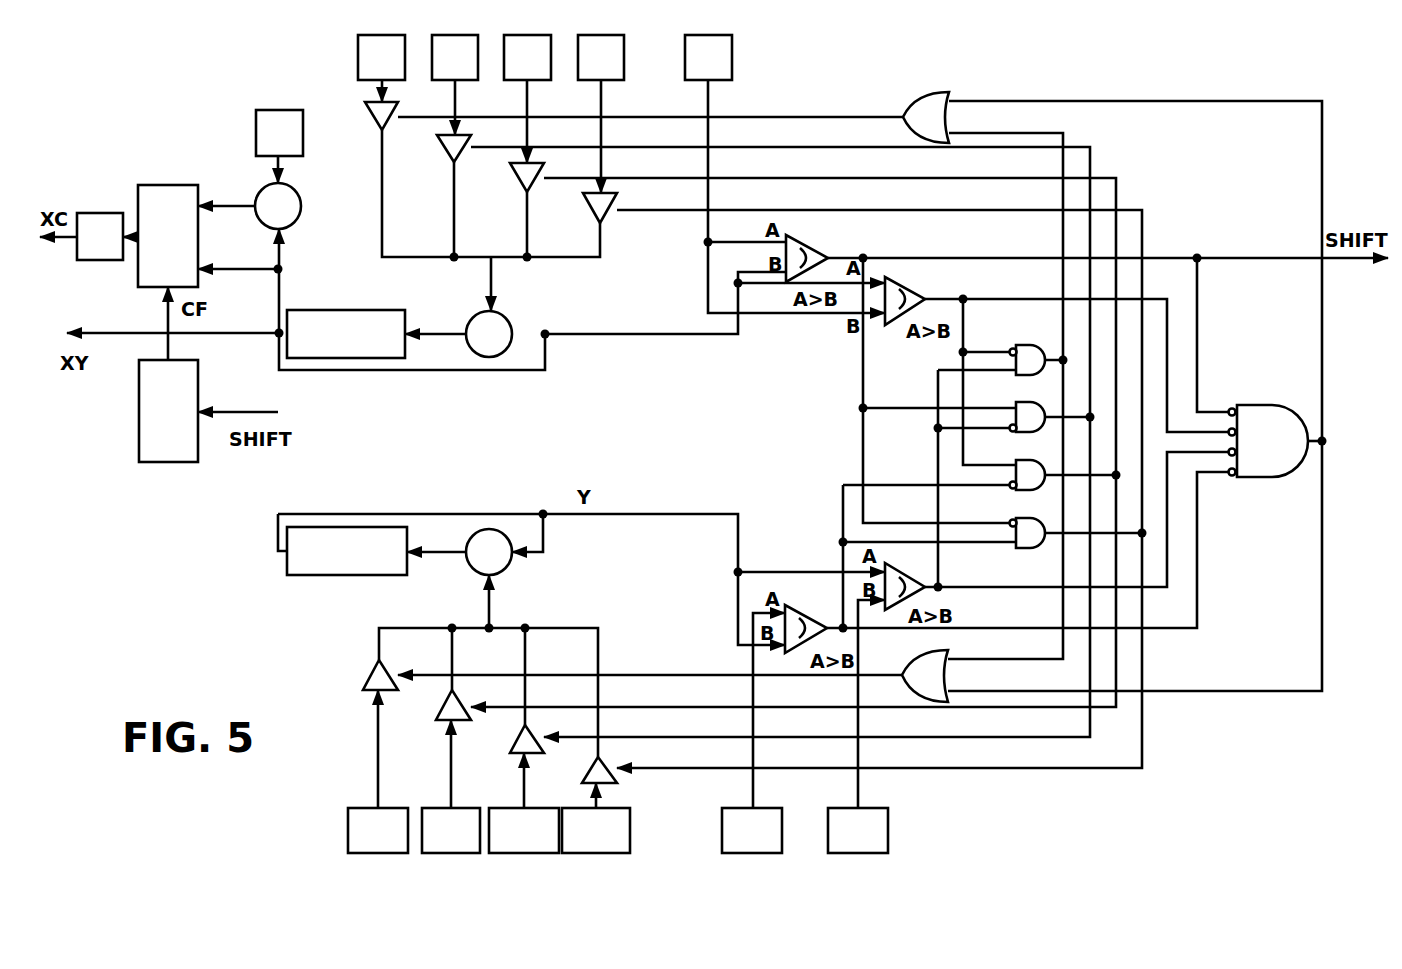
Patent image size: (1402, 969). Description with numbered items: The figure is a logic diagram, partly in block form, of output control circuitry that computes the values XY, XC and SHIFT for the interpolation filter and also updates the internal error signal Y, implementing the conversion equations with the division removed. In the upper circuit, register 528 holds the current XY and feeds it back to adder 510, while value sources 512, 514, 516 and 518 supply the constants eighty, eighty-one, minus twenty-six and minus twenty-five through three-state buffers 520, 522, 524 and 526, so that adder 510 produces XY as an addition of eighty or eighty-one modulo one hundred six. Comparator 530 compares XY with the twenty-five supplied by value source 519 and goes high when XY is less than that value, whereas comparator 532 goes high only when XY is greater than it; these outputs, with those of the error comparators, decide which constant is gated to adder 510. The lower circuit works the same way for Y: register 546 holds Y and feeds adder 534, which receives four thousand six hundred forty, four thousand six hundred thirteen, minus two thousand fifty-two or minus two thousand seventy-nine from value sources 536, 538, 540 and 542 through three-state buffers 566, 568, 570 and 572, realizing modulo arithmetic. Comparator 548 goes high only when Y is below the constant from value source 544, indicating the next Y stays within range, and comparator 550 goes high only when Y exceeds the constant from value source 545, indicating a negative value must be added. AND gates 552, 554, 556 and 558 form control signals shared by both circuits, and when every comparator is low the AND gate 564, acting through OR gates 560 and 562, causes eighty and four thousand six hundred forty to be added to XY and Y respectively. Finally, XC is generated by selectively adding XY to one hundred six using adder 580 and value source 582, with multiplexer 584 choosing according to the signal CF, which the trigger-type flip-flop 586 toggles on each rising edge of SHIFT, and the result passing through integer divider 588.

The adder 510 is at (505, 316).
The value source 512 is at (405, 47).
The value source 514 is at (478, 47).
The value source 516 is at (551, 47).
The value source 518 is at (624, 47).
The value source 519 is at (732, 47).
The three-state buffer 520 is at (372, 110).
The three-state buffer 522 is at (445, 148).
The three-state buffer 524 is at (520, 180).
The three-state buffer 526 is at (593, 202).
The register 528 is at (380, 310).
The comparator 530 is at (800, 245).
The comparator 532 is at (900, 285).
The adder 534 is at (508, 568).
The value source 536 is at (358, 853).
The value source 538 is at (430, 853).
The value source 540 is at (505, 853).
The value source 542 is at (580, 853).
The value source 544 is at (732, 853).
The value source 545 is at (838, 853).
The register 546 is at (362, 575).
The comparator 548 is at (800, 608).
The comparator 550 is at (920, 575).
The AND gate 552 is at (1042, 348).
The AND gate 554 is at (1025, 402).
The AND gate 556 is at (1025, 462).
The AND gate 558 is at (1025, 522).
The OR gate 560 is at (912, 672).
The OR gate 562 is at (930, 97).
The AND gate 564 is at (1295, 405).
The three-state buffer 566 is at (365, 672).
The three-state buffer 568 is at (440, 712).
The three-state buffer 570 is at (515, 745).
The three-state buffer 572 is at (590, 775).
The adder 580 is at (300, 214).
The value source 582 is at (273, 110).
The multiplexer 584 is at (166, 185).
The trigger-type flip-flop 586 is at (158, 462).
The integer divider 588 is at (97, 213).